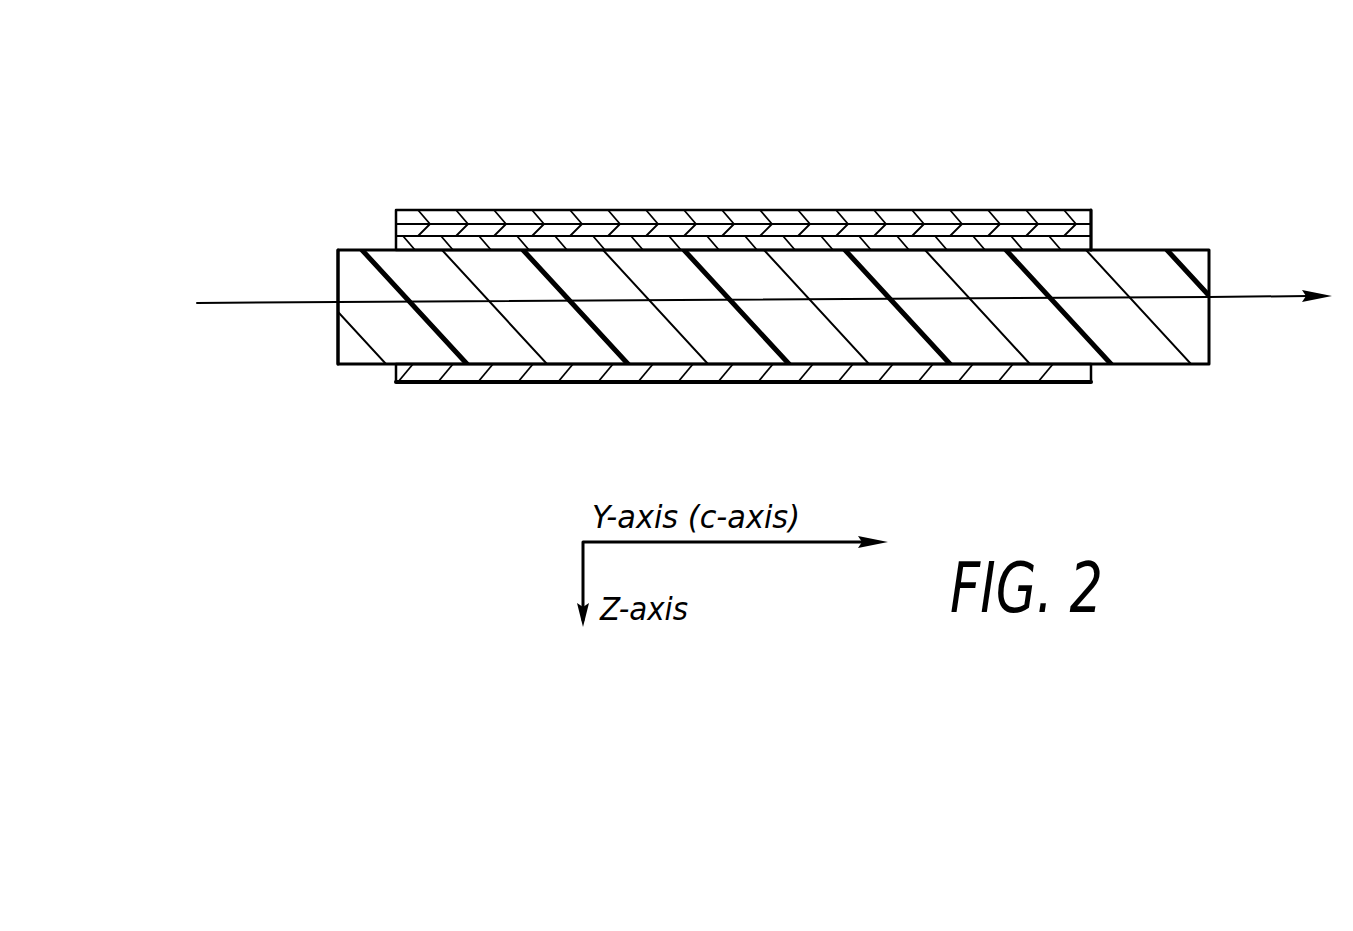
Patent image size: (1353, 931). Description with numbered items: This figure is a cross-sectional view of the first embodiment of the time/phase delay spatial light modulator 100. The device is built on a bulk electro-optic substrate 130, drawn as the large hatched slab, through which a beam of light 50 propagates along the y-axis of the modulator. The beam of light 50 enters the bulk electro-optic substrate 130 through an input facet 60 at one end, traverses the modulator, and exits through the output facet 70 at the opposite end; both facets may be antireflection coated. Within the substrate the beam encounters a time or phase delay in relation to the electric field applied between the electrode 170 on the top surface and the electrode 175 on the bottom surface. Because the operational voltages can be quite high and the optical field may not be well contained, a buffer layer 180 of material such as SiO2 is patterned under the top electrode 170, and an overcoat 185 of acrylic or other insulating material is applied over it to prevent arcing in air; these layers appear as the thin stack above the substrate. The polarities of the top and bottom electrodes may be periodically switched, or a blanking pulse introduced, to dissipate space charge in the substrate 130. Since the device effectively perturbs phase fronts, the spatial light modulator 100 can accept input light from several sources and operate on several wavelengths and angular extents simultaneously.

The spatial light modulator 100 is at (512, 170).
The beam of light 50 is at (248, 303).
The input facet 60 is at (338, 328).
The output facet 70 is at (1211, 330).
The bulk electro-optic substrate 130 is at (360, 352).
The electrode 170 is at (395, 228).
The electrode 175 is at (933, 383).
The buffer layer 180 is at (1094, 240).
The overcoat 185 is at (396, 210).